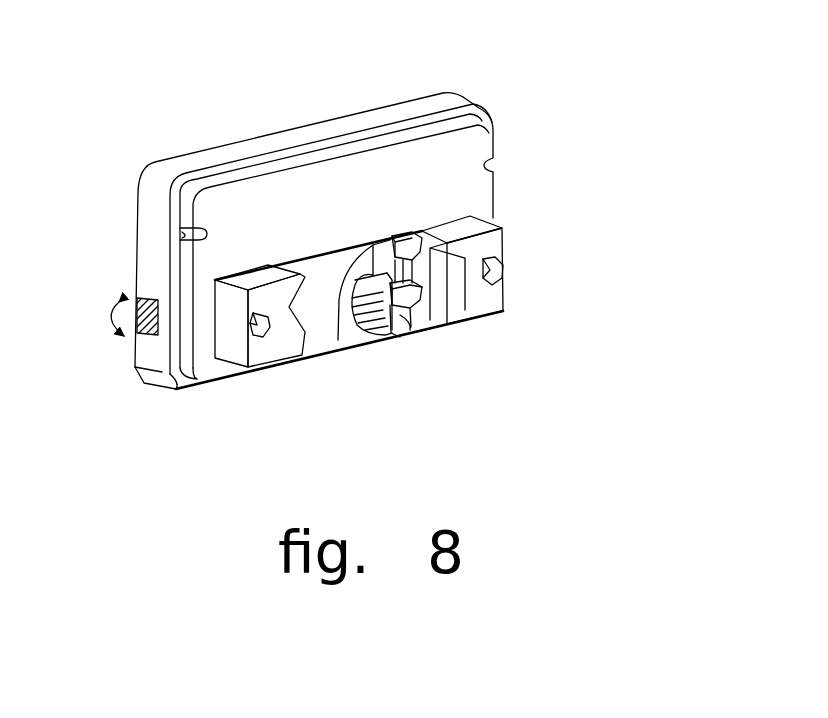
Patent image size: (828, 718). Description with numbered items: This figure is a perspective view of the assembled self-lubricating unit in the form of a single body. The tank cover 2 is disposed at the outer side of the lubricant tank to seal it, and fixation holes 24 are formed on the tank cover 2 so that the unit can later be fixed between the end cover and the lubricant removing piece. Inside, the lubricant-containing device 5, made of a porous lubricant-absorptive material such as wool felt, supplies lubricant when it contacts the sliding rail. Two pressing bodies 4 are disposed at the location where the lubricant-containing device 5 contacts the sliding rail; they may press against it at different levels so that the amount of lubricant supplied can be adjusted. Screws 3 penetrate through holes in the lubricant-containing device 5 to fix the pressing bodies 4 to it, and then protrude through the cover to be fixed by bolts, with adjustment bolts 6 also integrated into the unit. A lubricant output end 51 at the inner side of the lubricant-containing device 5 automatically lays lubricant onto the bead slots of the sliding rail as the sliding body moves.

The tank cover 2 is at (256, 130).
The lubricant-containing device 5 is at (402, 153).
The fixation holes 24 is at (180, 233).
The adjustment bolts 6 is at (139, 296).
The pressing bodies 4 is at (230, 337).
The screws 3 is at (266, 336).
The lubricant output end 51 is at (338, 340).